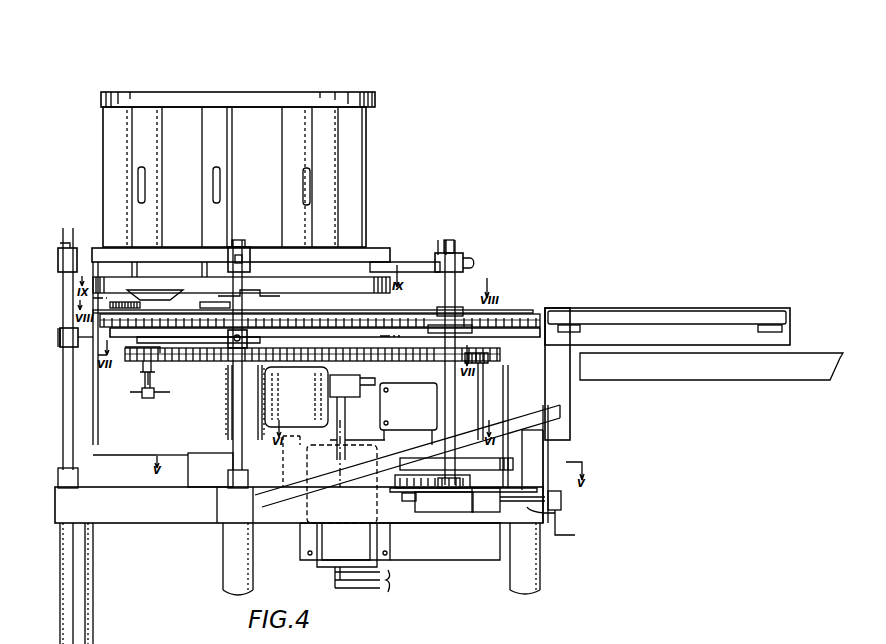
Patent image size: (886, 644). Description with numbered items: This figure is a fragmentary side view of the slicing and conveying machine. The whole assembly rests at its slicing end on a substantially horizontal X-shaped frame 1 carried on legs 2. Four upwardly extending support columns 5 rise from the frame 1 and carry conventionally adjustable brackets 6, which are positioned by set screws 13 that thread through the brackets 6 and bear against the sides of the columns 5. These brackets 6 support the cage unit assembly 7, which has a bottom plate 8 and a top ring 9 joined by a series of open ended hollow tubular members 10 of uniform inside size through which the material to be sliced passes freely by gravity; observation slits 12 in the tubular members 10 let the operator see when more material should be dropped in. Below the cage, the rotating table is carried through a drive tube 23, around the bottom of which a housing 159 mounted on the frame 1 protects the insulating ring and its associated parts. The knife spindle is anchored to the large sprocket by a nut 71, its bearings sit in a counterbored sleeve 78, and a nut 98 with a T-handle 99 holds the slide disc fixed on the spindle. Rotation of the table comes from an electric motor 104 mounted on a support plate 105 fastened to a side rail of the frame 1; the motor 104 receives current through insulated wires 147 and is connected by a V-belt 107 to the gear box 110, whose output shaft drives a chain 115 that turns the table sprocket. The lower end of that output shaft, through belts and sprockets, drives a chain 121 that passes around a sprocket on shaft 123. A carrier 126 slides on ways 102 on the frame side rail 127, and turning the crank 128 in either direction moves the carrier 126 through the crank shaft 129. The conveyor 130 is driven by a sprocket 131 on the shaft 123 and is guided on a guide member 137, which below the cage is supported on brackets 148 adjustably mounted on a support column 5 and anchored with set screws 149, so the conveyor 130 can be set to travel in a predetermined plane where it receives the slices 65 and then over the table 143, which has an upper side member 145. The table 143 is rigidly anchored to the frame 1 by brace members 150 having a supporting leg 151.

The X-shaped frame 1 is at (170, 516).
The legs 2 is at (93, 575).
The support columns 5 is at (450, 255).
The adjustable brackets 6 is at (70, 242).
The cage unit assembly 7 is at (386, 176).
The bottom plate 8 is at (383, 247).
The top ring 9 is at (372, 90).
The hollow tubular members 10 is at (365, 150).
The observation slits 12 is at (220, 183).
The set screws 13 is at (58, 250).
The drive tube 23 is at (265, 408).
The slices 65 is at (345, 312).
The nut 71 is at (143, 374).
The counterbored sleeve 78 is at (162, 302).
The nut 98 is at (151, 380).
The T-handle 99 is at (146, 398).
The ways 102 is at (405, 502).
The electric motor 104 is at (328, 568).
The support plate 105 is at (432, 560).
The V-belt 107 is at (375, 440).
The gear box 110 is at (422, 409).
The chain 115 is at (425, 364).
The chain 121 is at (474, 482).
The shaft 123 is at (460, 386).
The carrier 126 is at (460, 510).
The frame side rail 127 is at (525, 522).
The crank 128 is at (561, 500).
The crank shaft 129 is at (560, 520).
The conveyor 130 is at (531, 300).
The sprocket 131 is at (492, 332).
The guide member 137 is at (130, 370).
The table 143 is at (570, 395).
The upper side member 145 is at (650, 325).
The insulated wires 147 is at (712, 317).
The brackets 148 is at (82, 347).
The set screws 149 is at (58, 338).
The brace members 150 is at (520, 415).
The supporting leg 151 is at (540, 474).
The housing 159 is at (198, 480).